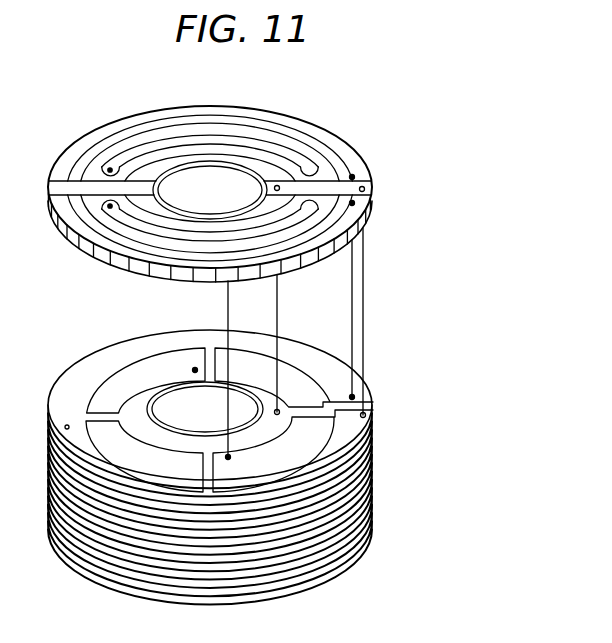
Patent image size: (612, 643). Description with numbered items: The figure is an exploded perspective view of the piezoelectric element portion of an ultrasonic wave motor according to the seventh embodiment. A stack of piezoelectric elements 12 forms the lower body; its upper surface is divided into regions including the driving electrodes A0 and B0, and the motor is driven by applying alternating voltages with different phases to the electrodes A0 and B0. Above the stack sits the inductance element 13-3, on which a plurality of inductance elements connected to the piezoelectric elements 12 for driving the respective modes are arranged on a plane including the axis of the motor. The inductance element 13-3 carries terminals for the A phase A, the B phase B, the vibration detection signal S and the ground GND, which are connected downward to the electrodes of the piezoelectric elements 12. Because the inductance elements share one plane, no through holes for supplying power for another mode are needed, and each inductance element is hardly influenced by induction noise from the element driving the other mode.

The inductance element 13-3 is at (305, 178).
The piezoelectric elements 12 is at (289, 461).
The ground GND is at (278, 186).
The B phase B is at (352, 176).
The vibration detection signal S is at (362, 187).
The A phase A is at (355, 203).
The driving electrode A0 is at (146, 380).
The driving electrode B0 is at (134, 456).